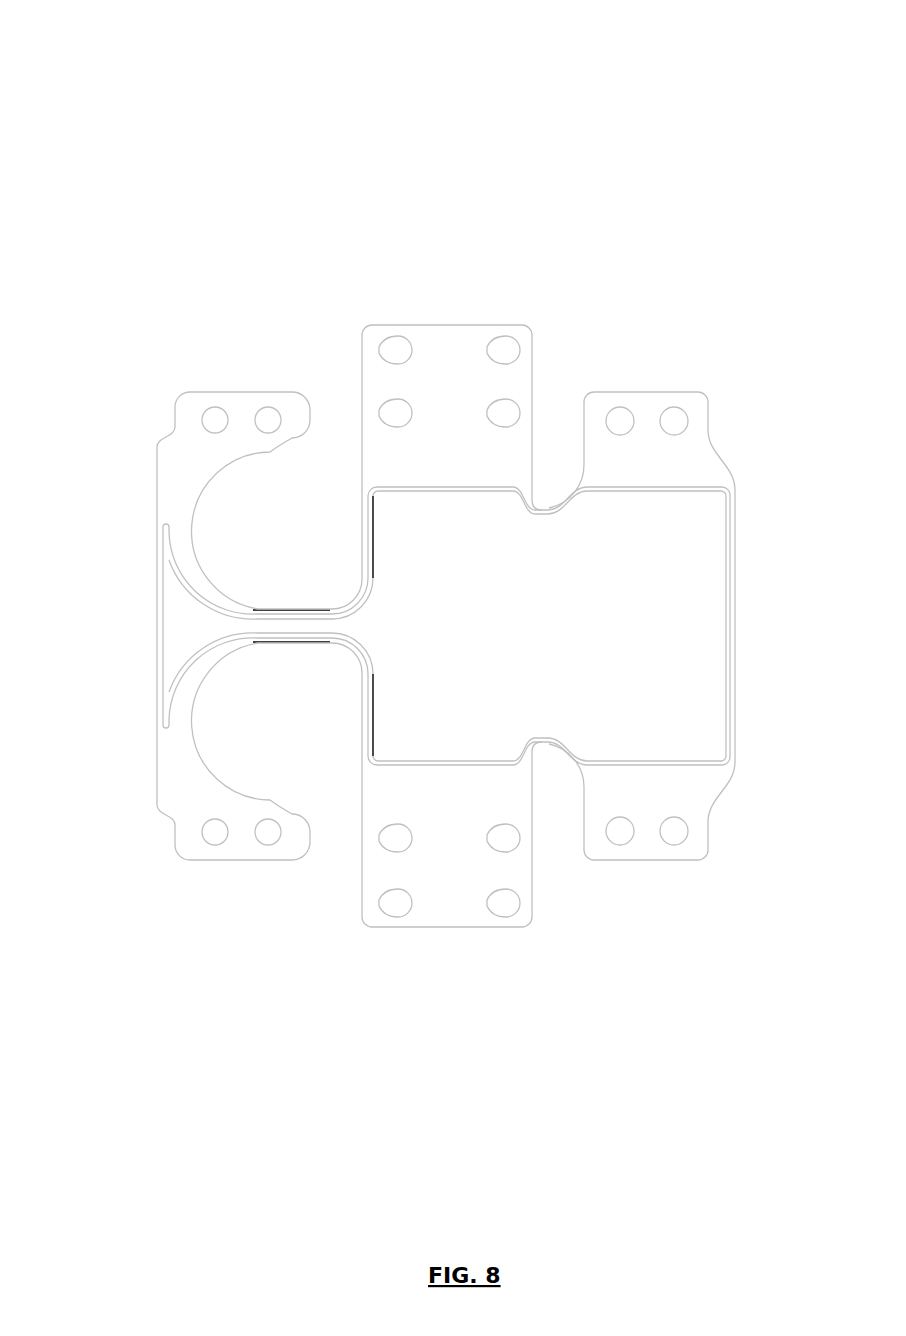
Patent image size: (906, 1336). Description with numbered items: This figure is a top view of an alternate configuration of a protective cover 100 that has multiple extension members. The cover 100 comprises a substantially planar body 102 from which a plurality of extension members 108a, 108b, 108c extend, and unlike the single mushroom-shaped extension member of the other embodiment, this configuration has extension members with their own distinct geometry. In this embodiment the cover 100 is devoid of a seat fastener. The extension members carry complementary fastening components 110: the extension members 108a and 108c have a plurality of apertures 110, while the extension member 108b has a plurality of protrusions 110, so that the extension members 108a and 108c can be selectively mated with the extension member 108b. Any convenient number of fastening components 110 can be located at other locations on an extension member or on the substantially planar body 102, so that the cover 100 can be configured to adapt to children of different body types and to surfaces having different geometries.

The protective cover 100 is at (645, 187).
The substantially planar body 102 is at (665, 540).
The extension member 108a is at (185, 620).
The extension member 108b is at (440, 878).
The extension member 108c is at (677, 420).
The fastening components 110 is at (263, 418).